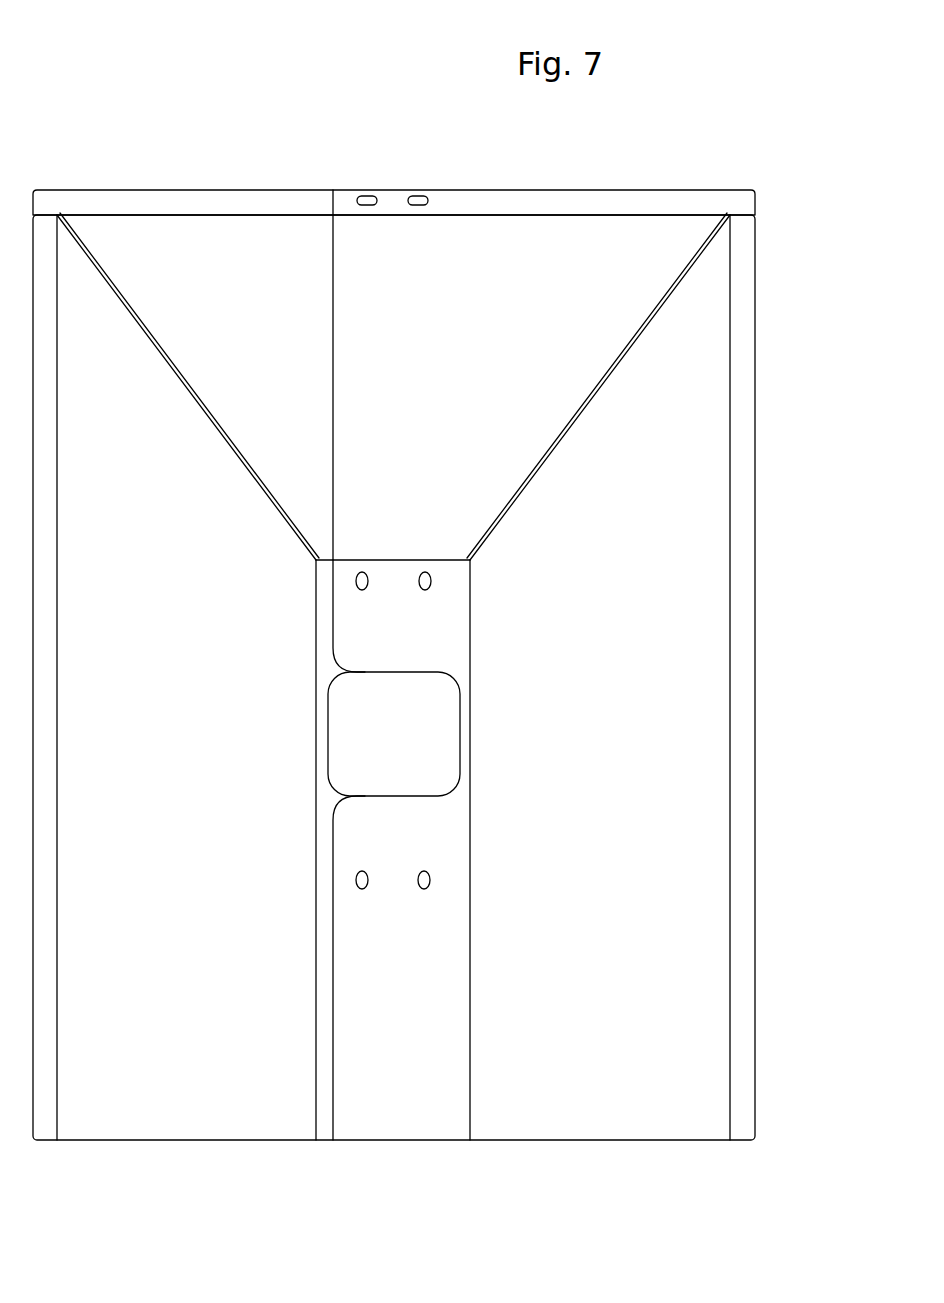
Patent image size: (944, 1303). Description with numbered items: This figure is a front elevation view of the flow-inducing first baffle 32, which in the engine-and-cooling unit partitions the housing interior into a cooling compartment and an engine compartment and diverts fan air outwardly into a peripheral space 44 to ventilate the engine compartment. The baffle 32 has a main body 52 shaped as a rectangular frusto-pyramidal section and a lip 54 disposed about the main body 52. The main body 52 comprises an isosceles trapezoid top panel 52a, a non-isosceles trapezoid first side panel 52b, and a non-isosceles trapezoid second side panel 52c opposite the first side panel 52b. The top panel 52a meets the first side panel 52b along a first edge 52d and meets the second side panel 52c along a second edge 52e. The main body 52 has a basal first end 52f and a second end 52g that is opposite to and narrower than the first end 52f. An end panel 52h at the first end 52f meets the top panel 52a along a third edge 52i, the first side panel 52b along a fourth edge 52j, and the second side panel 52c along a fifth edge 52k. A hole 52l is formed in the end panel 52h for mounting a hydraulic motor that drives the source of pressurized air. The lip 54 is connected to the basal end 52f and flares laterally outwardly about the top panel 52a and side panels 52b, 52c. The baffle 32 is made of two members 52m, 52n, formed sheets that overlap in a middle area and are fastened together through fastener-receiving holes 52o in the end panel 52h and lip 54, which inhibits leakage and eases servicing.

The flow-inducing first baffle 32 is at (132, 110).
The peripheral space 44 is at (500, 195).
The lip 54 is at (262, 192).
The main body 52 is at (668, 472).
The top panel 52a is at (397, 340).
The first side panel 52b is at (236, 826).
The second side panel 52c is at (648, 795).
The first edge 52d is at (186, 387).
The second edge 52e is at (576, 412).
The basal first end 52f is at (440, 652).
The second end 52g is at (728, 686).
The end panel 52h is at (401, 655).
The third edge 52i is at (390, 556).
The fourth edge 52j is at (316, 643).
The fifth edge 52k is at (472, 604).
The hole 52l is at (329, 745).
The first member 52m is at (312, 426).
The second member 52n is at (358, 422).
The fastener-receiving holes 52o is at (423, 205).